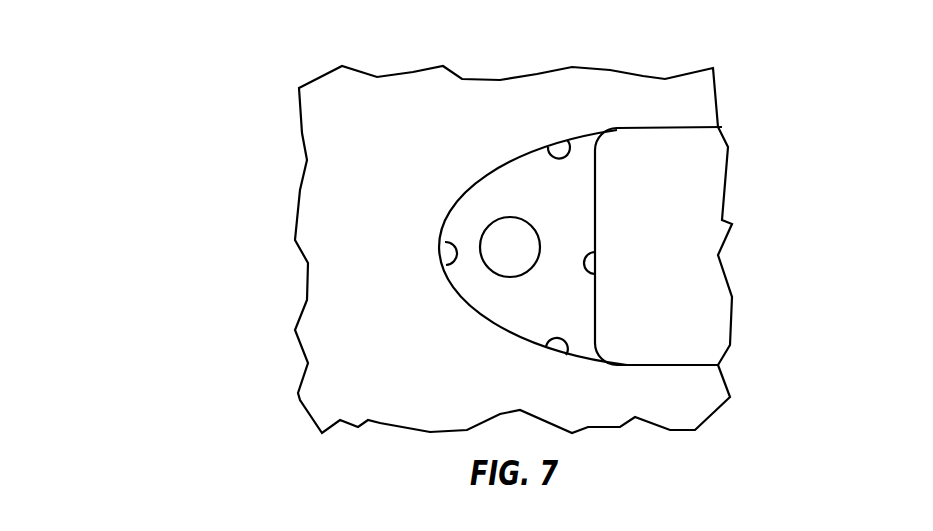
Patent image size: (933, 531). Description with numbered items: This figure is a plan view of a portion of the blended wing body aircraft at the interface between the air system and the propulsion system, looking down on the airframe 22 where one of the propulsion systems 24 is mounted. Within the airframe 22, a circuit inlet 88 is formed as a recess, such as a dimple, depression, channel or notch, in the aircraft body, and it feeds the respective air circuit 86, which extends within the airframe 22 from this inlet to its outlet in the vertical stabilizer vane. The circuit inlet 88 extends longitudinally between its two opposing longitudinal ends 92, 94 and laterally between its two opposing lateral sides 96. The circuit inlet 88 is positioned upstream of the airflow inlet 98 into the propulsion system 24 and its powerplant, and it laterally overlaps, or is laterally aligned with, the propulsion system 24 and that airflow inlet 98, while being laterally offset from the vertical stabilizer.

The airframe 22 is at (732, 76).
The propulsion system 24 is at (709, 172).
The air circuit 86 is at (488, 219).
The circuit inlet 88 is at (495, 298).
The longitudinal end 92 is at (447, 262).
The longitudinal end 94 is at (590, 272).
The lateral side 96 is at (562, 150).
The airflow inlet 98 is at (587, 210).